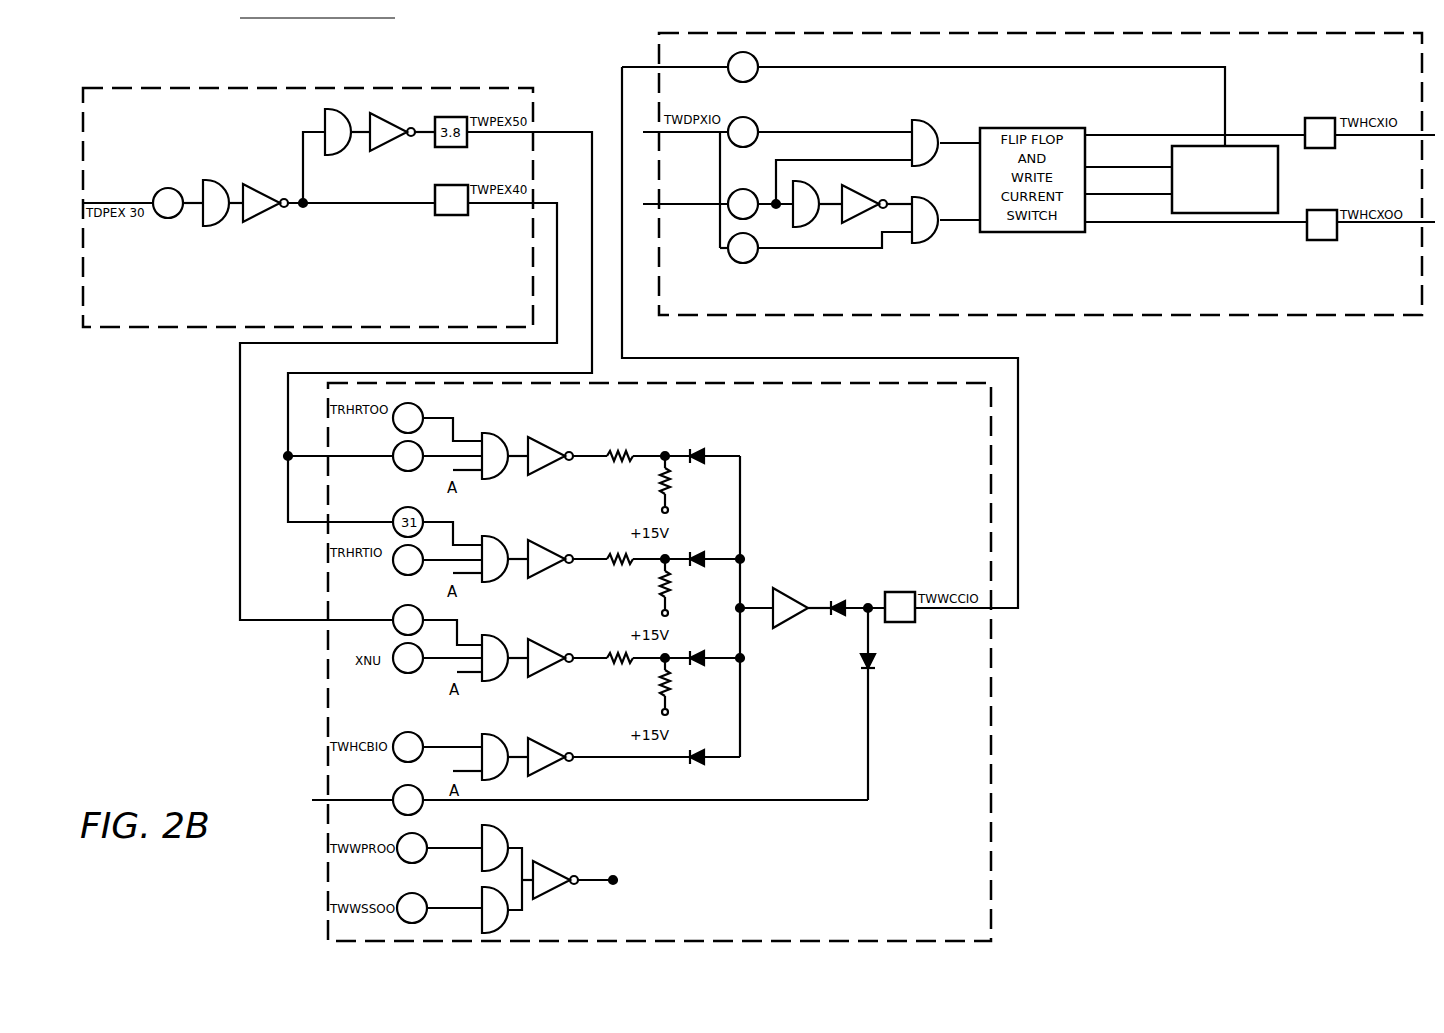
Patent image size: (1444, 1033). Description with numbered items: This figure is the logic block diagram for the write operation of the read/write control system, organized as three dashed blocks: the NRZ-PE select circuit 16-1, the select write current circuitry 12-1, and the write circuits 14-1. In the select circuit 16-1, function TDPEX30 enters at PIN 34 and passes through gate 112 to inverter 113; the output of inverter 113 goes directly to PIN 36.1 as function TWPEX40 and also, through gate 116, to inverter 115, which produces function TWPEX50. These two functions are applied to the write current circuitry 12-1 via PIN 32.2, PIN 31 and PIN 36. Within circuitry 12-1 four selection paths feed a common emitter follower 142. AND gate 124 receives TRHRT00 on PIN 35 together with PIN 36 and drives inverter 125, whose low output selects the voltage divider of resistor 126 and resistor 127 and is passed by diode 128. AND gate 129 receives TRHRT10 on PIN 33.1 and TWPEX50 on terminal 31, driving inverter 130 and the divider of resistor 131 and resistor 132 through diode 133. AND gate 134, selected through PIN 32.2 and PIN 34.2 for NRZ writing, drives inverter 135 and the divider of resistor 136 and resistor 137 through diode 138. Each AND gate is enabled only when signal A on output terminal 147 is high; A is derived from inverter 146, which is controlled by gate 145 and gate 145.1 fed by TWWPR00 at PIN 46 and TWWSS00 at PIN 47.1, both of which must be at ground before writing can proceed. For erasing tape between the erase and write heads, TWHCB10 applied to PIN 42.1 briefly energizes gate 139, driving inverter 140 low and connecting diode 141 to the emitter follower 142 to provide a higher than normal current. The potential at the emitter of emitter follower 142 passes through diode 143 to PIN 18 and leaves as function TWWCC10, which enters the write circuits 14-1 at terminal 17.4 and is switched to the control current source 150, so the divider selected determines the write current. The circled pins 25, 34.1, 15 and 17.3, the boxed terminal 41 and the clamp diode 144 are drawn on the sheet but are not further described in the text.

The select write current circuitry 12-1 is at (1081, 724).
The write circuits 14-1 is at (1333, 316).
The NRZ-PE select circuit 16-1 is at (133, 328).
The PIN 34 is at (168, 203).
The gate 112 is at (214, 227).
The inverter 113 is at (262, 218).
The inverter 115 is at (386, 150).
The gate 116 is at (338, 157).
The PIN 36.1 is at (450, 188).
The PIN 17.4 is at (752, 76).
The input pin TWDPXIO 25 is at (743, 132).
The input pin 34.1 is at (733, 197).
The input pin 15 is at (743, 248).
The control current source 150 is at (1278, 158).
The PIN 31 is at (1320, 133).
The output connector TWHCXOO 41 is at (1322, 225).
The PIN 35 is at (408, 418).
The PIN 36 is at (408, 456).
The PIN 33.1 is at (403, 565).
The PIN 32.2 is at (404, 616).
The PIN 34.2 is at (412, 672).
The PIN 42.1 is at (410, 757).
The input pin 17.3 is at (402, 792).
The PIN 46 is at (412, 848).
The PIN 47.1 is at (410, 897).
The AND gate 124 is at (496, 436).
The inverter 125 is at (550, 440).
The resistor 126 is at (612, 458).
The resistor 127 is at (672, 479).
The diode 128 is at (695, 448).
The AND gate 129 is at (494, 536).
The inverter 130 is at (550, 552).
The resistor 131 is at (613, 573).
The resistor 132 is at (672, 590).
The diode 133 is at (694, 552).
The AND gate 134 is at (488, 637).
The inverter 135 is at (548, 648).
The resistor 136 is at (618, 666).
The resistor 137 is at (672, 690).
The diode 138 is at (694, 652).
The gate 139 is at (493, 737).
The inverter 140 is at (550, 748).
The diode 141 is at (706, 766).
The emitter follower 142 is at (786, 588).
The diode 143 is at (838, 600).
The clamp diode 144 is at (860, 666).
The PIN 18 is at (900, 607).
The gate 145 is at (512, 828).
The gate 145.1 is at (510, 923).
The inverter 146 is at (556, 867).
The output terminal 147 is at (614, 873).